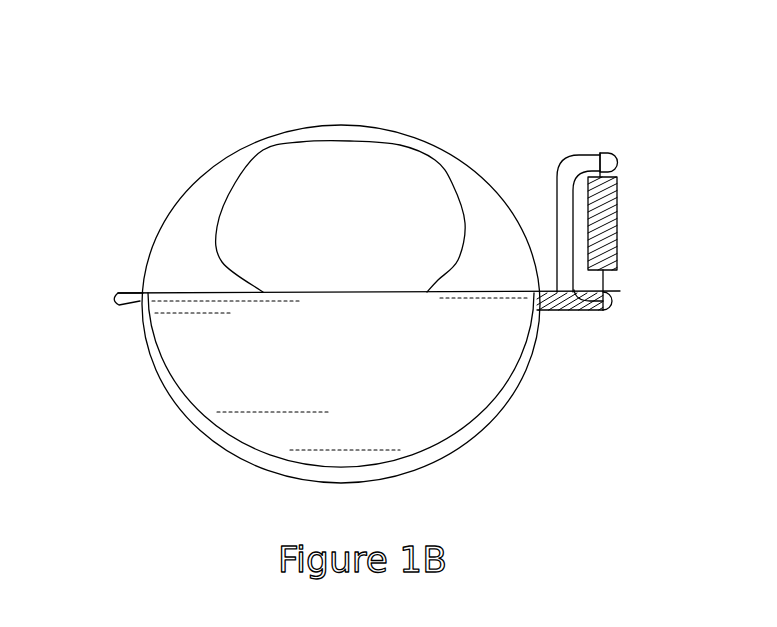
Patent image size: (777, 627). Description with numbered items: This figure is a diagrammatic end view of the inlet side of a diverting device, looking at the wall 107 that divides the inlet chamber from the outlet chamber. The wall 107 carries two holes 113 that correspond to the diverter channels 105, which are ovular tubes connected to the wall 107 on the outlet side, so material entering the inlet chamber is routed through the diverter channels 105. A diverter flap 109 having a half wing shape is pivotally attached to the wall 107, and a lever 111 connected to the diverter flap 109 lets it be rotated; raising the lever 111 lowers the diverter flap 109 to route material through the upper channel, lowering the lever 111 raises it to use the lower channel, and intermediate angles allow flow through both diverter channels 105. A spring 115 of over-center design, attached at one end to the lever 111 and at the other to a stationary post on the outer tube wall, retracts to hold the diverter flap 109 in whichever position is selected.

The diverter channels 105 is at (279, 193).
The wall 107 is at (178, 257).
The diverter flap 109 is at (418, 372).
The lever 111 is at (606, 154).
The holes 113 is at (402, 132).
The spring 115 is at (618, 232).